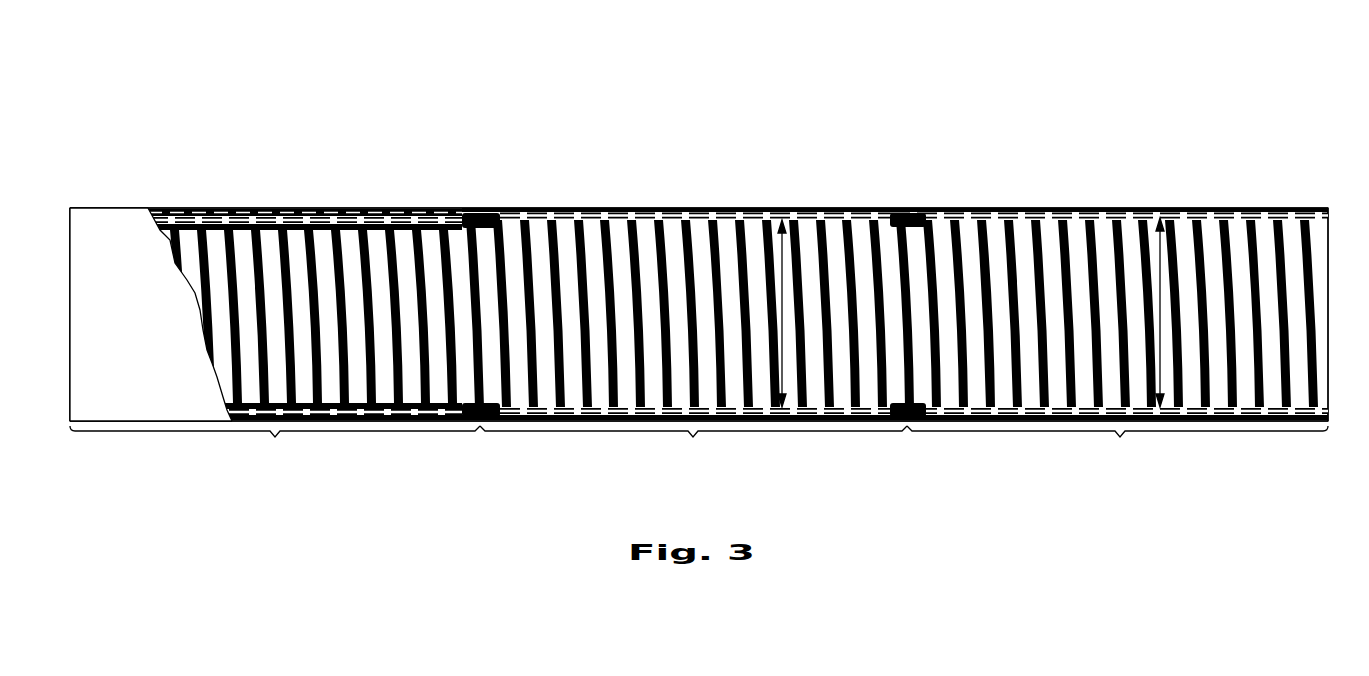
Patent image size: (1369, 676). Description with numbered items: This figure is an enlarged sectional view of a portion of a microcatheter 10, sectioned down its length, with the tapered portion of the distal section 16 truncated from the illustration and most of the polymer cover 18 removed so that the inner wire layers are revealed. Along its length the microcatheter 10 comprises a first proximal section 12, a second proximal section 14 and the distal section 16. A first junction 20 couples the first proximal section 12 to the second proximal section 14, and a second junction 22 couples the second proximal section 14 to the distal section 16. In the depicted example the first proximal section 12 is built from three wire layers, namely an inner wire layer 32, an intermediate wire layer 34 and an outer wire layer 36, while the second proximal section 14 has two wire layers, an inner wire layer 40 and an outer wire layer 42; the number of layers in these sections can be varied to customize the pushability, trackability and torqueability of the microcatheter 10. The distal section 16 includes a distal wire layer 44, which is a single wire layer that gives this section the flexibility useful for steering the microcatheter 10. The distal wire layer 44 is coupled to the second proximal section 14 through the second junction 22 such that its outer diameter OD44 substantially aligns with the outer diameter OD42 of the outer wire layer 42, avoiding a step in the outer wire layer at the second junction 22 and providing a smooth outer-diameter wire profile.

The microcatheter 10 is at (378, 98).
The first proximal section 12 is at (275, 447).
The second proximal section 14 is at (693, 447).
The distal section 16 is at (1117, 447).
The polymer cover 18 is at (110, 222).
The first junction 20 is at (483, 213).
The second junction 22 is at (908, 214).
The inner wire layer 32 is at (211, 214).
The intermediate wire layer 34 is at (253, 221).
The outer wire layer 36 is at (291, 227).
The inner wire layer 40 is at (538, 214).
The outer wire layer 42 is at (576, 220).
The distal wire layer 44 is at (966, 219).
The outer diameter of outer wire layer OD42 is at (781, 257).
The outer diameter of distal wire layer OD44 is at (1159, 257).